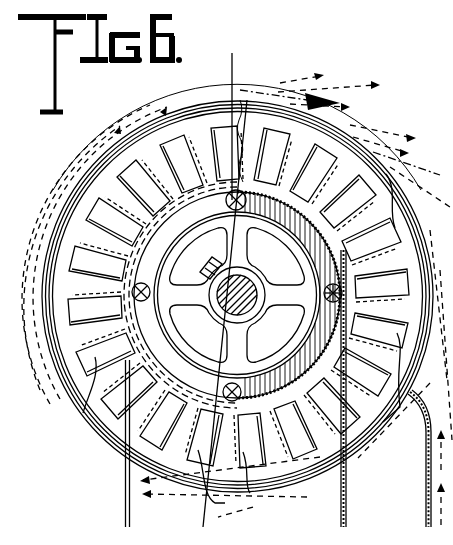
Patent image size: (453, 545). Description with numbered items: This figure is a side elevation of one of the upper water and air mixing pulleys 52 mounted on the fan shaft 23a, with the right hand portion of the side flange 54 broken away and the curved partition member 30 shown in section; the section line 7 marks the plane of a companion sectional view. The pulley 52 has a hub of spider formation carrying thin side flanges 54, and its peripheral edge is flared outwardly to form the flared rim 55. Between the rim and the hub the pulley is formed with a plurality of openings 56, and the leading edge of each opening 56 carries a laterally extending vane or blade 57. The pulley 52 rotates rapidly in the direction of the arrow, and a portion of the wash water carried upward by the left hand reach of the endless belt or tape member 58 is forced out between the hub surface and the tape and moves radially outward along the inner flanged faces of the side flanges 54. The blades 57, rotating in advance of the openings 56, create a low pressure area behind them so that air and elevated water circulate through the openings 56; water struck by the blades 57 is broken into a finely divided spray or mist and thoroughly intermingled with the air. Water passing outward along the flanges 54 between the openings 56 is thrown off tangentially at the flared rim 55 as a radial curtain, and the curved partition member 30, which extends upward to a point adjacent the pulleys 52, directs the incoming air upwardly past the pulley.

The section line 7- 7 is at (231, 63).
The pulley 52 is at (69, 201).
The side flange 54 is at (82, 278).
The flared rim 55 is at (342, 133).
The opening 56 is at (80, 430).
The vane or blade 57 is at (388, 172).
The endless belt or tape member 58 is at (129, 505).
The curved partition member 30 is at (427, 495).
The fan shaft 23a is at (226, 314).